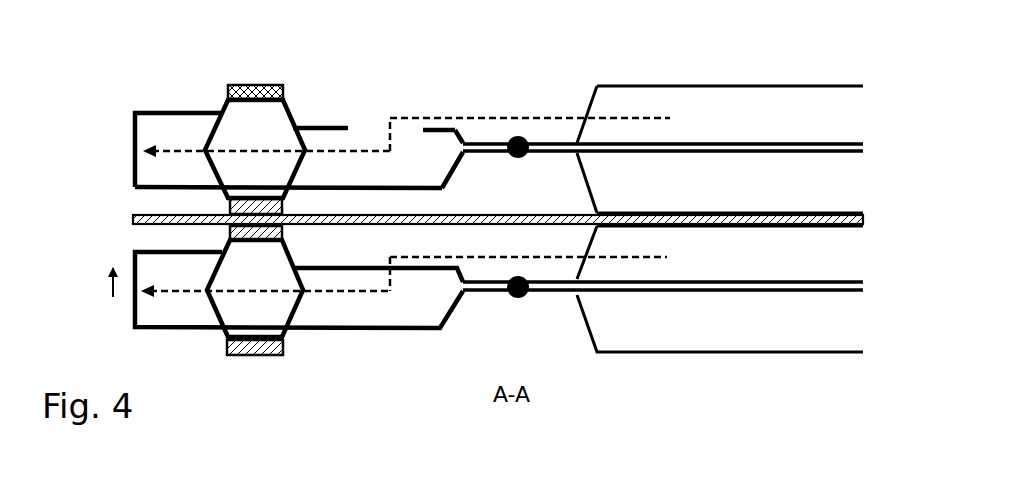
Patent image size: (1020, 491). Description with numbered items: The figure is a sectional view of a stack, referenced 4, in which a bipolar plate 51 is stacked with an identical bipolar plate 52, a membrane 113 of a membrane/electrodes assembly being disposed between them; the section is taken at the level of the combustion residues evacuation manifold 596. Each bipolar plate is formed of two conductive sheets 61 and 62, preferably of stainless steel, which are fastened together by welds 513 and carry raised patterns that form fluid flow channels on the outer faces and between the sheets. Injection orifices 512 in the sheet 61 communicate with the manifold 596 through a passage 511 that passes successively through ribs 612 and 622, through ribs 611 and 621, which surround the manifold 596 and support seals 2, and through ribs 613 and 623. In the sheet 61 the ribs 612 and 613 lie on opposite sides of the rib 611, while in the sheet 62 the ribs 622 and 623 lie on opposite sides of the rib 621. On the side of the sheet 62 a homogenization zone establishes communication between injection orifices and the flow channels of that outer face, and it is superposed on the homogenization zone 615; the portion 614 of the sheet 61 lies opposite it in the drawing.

The connector arrangement 4 is at (118, 48).
The seal 2 is at (253, 80).
The bipolar plate 51 is at (870, 145).
The bipolar plate 52 is at (870, 286).
The conductive sheet 61 is at (825, 84).
The conductive sheet 62 is at (742, 160).
The membrane 113 is at (870, 219).
The passage 511 is at (133, 140).
The injection orifice 512 is at (362, 128).
The weld 513 is at (518, 147).
The combustion residues evacuation manifold 596 is at (103, 306).
The rib 611 is at (225, 107).
The rib 612 is at (133, 114).
The rib 613 is at (323, 127).
The upper receptacle wall 614 is at (740, 113).
The homogenization zone 615 is at (763, 197).
The rib 621 is at (213, 197).
The rib 622 is at (133, 188).
The rib 623 is at (321, 190).